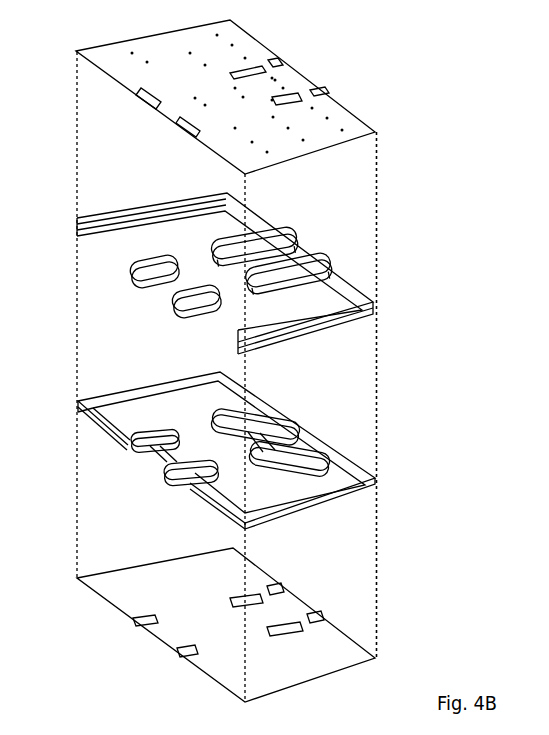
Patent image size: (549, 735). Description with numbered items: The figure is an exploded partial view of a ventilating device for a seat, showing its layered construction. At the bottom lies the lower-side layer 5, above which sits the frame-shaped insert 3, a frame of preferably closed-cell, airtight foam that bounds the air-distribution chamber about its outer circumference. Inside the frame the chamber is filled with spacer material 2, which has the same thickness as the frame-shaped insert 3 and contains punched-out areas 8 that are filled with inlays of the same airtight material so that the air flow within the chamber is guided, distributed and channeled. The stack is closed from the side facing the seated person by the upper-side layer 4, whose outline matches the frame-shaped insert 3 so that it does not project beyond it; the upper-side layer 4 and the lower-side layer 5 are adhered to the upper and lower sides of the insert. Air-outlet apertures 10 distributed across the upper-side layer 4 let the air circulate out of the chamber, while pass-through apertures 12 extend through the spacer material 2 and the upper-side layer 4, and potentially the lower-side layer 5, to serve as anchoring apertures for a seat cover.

The air-outlet apertures 10 is at (97, 47).
The upper-side layer 4 is at (246, 97).
The pass-through apertures 12 is at (233, 347).
The frame-shaped insert 3 is at (225, 262).
The spacer material 2 is at (245, 450).
The punched-out areas 8 is at (232, 451).
The lower-side layer 5 is at (226, 611).